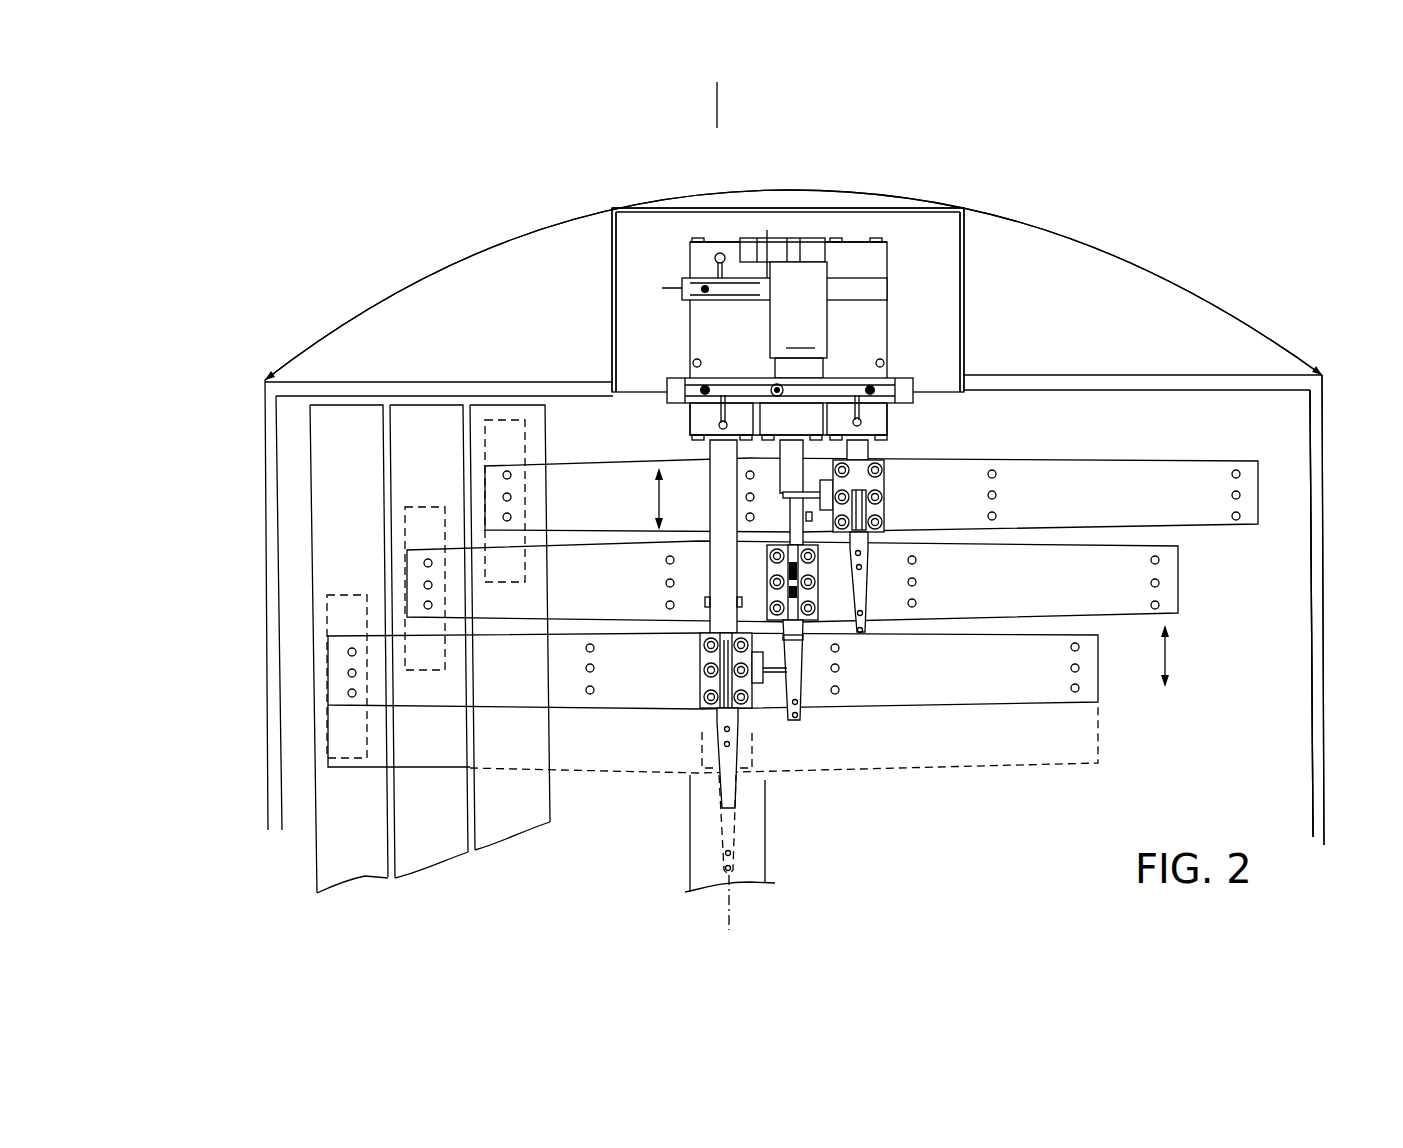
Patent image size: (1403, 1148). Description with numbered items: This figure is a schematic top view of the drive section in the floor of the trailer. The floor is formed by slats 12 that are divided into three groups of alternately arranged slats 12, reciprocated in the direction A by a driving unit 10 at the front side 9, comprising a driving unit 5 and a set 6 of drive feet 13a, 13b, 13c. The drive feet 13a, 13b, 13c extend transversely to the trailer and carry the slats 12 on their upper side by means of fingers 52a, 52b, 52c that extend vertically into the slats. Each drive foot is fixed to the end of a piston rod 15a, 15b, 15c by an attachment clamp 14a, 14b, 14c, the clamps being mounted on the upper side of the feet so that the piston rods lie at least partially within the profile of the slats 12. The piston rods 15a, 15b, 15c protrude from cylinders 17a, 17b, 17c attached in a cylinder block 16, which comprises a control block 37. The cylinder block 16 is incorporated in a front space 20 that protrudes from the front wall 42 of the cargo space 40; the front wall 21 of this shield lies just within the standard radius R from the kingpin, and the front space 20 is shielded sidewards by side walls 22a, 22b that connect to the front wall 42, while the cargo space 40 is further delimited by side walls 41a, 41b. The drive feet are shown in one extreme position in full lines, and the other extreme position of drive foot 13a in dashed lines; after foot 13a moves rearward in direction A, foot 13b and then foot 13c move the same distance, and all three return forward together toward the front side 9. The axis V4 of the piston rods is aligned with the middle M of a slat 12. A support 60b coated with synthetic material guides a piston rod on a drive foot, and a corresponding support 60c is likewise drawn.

The driving unit 10 is at (293, 261).
The front wall of the shield 21 is at (703, 208).
The front side 9 is at (823, 198).
The front space 20 is at (938, 234).
The side wall 22a is at (612, 265).
The side wall 22b is at (967, 250).
The cylinder block 16 is at (713, 333).
The control block 37 is at (798, 320).
The driving unit 5 is at (940, 316).
The cylinder 17a is at (667, 396).
The cylinder 17b is at (807, 407).
The cylinder 17c is at (883, 408).
The front wall 42 is at (405, 397).
The finger 52a is at (348, 624).
The finger 52b is at (425, 530).
The finger 52c is at (498, 442).
The side wall 41a is at (270, 555).
The side wall 41b is at (1317, 668).
The cargo space 40 is at (1293, 718).
The piston rod 15a is at (720, 492).
The piston rod 15b is at (790, 472).
The piston rod 15c is at (880, 455).
The attachment clamp 14a is at (703, 684).
The attachment clamp 14b is at (820, 598).
The attachment clamp 14c is at (867, 483).
The drive foot 13a is at (933, 679).
The drive foot 13b is at (1033, 590).
The drive foot 13c is at (1118, 500).
The support 60b is at (812, 518).
The third sensor 60c is at (706, 605).
The set of drive feet 6 is at (1286, 610).
The slats 12 is at (360, 857).
The standard radius R is at (1202, 298).
The direction A is at (912, 577).
The middle of a slat M is at (742, 902).
The axis of the piston rods V4 is at (740, 106).